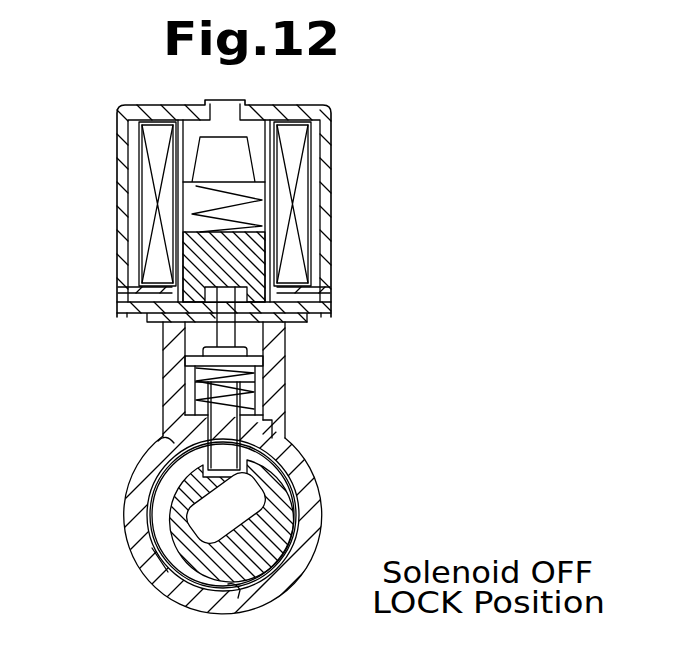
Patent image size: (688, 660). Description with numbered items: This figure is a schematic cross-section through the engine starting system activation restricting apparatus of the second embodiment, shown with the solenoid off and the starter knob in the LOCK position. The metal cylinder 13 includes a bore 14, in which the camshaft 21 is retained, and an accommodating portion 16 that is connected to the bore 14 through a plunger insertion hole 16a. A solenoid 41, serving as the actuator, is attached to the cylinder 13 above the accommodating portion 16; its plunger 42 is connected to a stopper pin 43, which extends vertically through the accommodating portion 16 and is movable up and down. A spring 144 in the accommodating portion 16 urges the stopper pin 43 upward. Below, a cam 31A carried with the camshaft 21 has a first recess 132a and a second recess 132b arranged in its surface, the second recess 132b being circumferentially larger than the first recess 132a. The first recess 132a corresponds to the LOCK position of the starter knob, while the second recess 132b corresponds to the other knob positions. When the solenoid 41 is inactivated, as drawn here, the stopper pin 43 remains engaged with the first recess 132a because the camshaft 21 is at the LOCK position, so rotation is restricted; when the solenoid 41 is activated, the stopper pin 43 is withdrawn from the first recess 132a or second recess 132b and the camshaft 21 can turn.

The solenoid 41 is at (331, 173).
The plunger 42 is at (228, 331).
The stopper pin 43 is at (245, 392).
The accommodating portion 16 is at (185, 345).
The spring 144 is at (195, 400).
The plunger insertion hole 16a is at (268, 428).
The first recess 132a is at (163, 444).
The cam 31A is at (303, 468).
The cylinder 13 is at (315, 520).
The second recess 132b is at (150, 565).
The camshaft 21 is at (290, 578).
The bore 14 is at (236, 597).